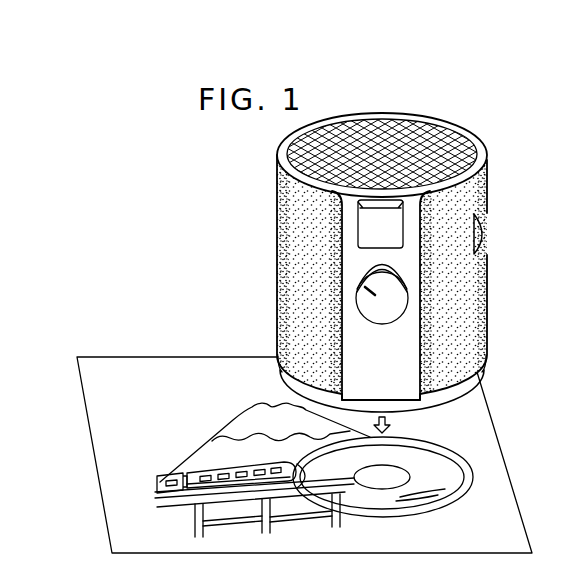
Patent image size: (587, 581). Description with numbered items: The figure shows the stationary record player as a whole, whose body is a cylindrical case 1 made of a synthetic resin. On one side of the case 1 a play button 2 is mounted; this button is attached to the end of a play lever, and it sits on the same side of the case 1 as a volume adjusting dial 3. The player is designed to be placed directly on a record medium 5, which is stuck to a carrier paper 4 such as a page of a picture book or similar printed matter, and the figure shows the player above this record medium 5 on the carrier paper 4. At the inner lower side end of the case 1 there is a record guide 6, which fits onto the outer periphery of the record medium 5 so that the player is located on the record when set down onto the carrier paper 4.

The cylindrical case 1 is at (287, 227).
The play button 2 is at (393, 224).
The volume adjusting dial 3 is at (385, 318).
The carrier paper 4 is at (105, 417).
The record medium 5 is at (465, 462).
The record guide 6 is at (463, 398).